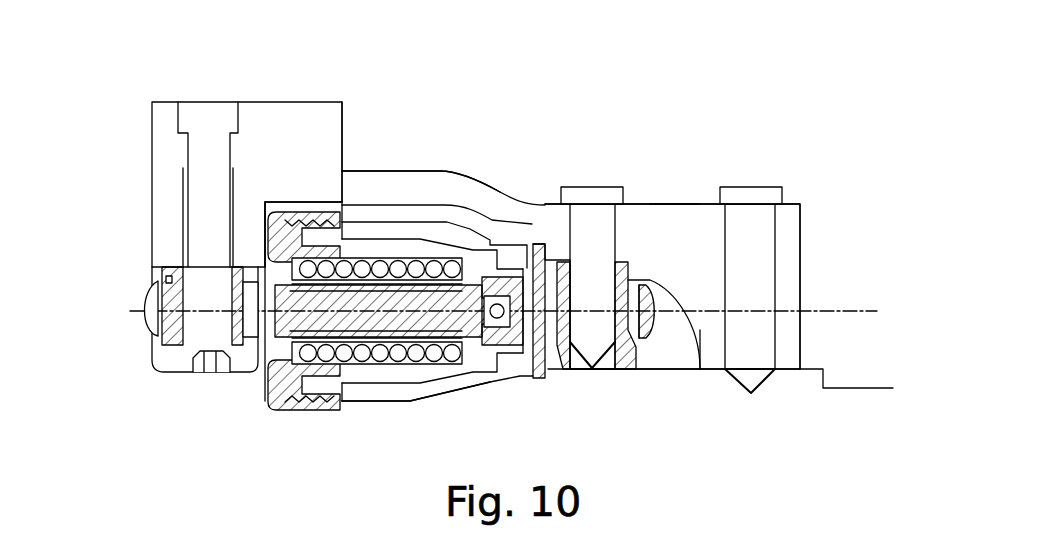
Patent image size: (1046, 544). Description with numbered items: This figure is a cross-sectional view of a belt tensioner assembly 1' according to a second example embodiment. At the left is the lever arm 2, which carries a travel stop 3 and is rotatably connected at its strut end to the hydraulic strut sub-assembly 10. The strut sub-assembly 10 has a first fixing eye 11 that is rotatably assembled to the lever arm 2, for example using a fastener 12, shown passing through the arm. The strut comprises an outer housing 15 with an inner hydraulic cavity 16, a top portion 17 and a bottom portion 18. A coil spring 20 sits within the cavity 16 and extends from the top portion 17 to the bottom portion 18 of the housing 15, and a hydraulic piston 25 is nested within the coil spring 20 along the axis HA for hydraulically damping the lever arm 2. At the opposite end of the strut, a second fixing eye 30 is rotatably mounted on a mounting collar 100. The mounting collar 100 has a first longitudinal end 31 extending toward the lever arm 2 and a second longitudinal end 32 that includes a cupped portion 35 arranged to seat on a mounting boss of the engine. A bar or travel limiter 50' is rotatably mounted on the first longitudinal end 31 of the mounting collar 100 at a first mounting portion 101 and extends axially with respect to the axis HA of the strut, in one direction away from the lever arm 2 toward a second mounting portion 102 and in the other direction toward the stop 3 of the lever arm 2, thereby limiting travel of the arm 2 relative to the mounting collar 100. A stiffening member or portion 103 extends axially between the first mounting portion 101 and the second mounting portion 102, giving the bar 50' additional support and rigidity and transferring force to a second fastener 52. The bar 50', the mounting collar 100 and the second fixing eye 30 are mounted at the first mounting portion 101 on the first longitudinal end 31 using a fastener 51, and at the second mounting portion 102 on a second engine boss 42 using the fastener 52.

The belt tensioner assembly 1' is at (672, 195).
The lever arm 2 is at (268, 104).
The travel stop 3 is at (343, 148).
The hydraulic strut sub-assembly 10 is at (402, 406).
The first fixing eye 11 is at (150, 318).
The fastener 12 is at (238, 362).
The outer housing 15 is at (457, 384).
The inner hydraulic cavity 16 is at (420, 365).
The top portion 17 is at (270, 332).
The bottom portion 18 is at (507, 370).
The coil spring 20 is at (404, 259).
The hydraulic piston 25 is at (356, 323).
The second fixing eye 30 is at (645, 318).
The first longitudinal end 31 is at (606, 265).
The second longitudinal end 32 is at (613, 341).
The cupped portion 35 is at (537, 378).
The second engine boss 42 is at (778, 380).
The bar or travel limiter 50' is at (443, 159).
The fastener 51 is at (595, 192).
The second fastener 52 is at (756, 186).
The mounting collar 100 is at (608, 338).
The first mounting portion 101 is at (557, 212).
The second mounting portion 102 is at (722, 212).
The stiffening member or portion 103 is at (687, 217).
The axis HA is at (838, 312).